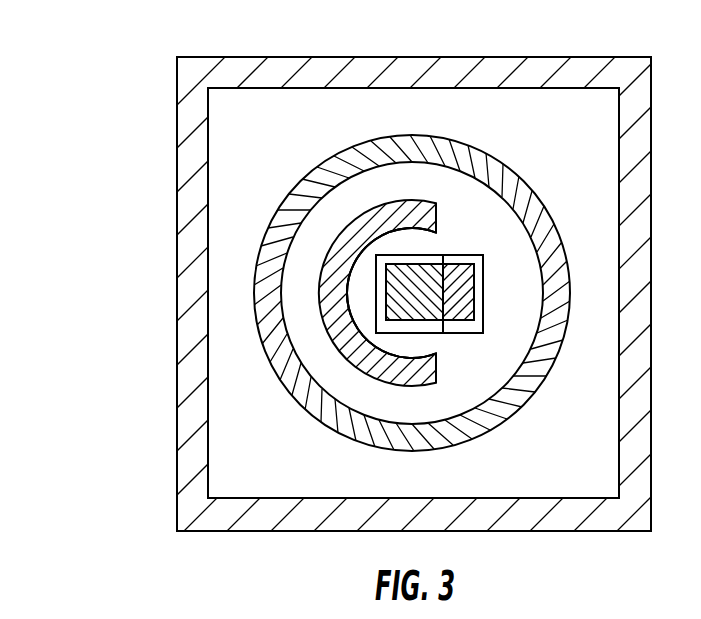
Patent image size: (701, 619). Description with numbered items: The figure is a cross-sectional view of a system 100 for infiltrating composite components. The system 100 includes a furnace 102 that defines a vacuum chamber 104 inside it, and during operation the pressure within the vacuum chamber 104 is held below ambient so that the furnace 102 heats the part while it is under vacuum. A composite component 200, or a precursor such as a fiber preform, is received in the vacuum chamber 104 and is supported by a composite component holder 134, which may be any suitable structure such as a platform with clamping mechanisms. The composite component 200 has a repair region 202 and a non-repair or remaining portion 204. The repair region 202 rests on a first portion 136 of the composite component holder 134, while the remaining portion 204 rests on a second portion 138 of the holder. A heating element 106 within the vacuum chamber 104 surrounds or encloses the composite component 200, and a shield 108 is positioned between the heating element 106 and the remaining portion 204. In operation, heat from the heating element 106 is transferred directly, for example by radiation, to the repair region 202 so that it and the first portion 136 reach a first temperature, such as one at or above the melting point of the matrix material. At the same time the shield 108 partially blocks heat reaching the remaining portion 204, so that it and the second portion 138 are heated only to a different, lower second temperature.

The system for infiltrating composite components 100 is at (70, 112).
The furnace 102 is at (257, 57).
The vacuum chamber 104 is at (277, 149).
The heating element 106 is at (498, 427).
The shield 108 is at (388, 200).
The composite component holder 134 is at (373, 290).
The first portion of the composite component holder 136 is at (484, 305).
The second portion of the composite component holder 138 is at (372, 312).
The composite component 200 is at (455, 263).
The repair region 202 is at (477, 282).
The remaining portion 204 is at (430, 322).